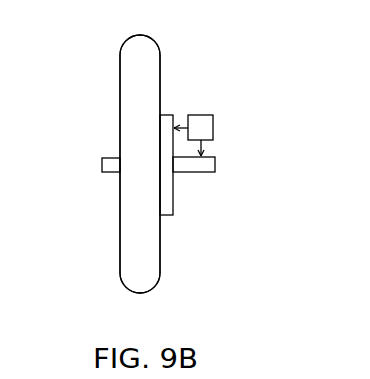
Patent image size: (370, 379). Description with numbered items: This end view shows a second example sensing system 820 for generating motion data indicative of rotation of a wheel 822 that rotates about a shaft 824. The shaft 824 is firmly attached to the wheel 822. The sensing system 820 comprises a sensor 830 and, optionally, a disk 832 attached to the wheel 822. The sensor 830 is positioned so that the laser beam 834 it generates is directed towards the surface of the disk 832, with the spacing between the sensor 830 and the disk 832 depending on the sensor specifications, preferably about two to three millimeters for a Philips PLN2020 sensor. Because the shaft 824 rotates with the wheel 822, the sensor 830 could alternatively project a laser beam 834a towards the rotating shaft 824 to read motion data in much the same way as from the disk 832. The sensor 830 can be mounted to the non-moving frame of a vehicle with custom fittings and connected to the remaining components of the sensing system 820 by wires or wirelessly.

The sensing system 820 is at (107, 75).
The wheel 822 is at (128, 117).
The shaft 824 is at (107, 165).
The sensor 830 is at (205, 128).
The disk 832 is at (165, 190).
The laser beam 834 is at (183, 117).
The laser beam 834a is at (203, 148).